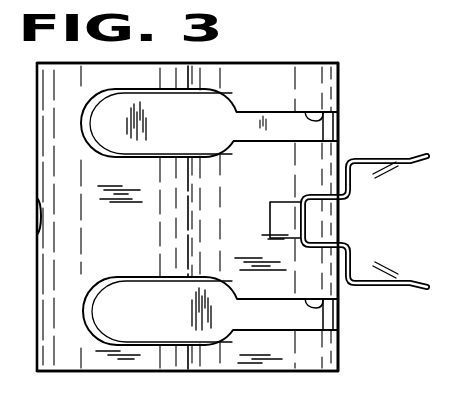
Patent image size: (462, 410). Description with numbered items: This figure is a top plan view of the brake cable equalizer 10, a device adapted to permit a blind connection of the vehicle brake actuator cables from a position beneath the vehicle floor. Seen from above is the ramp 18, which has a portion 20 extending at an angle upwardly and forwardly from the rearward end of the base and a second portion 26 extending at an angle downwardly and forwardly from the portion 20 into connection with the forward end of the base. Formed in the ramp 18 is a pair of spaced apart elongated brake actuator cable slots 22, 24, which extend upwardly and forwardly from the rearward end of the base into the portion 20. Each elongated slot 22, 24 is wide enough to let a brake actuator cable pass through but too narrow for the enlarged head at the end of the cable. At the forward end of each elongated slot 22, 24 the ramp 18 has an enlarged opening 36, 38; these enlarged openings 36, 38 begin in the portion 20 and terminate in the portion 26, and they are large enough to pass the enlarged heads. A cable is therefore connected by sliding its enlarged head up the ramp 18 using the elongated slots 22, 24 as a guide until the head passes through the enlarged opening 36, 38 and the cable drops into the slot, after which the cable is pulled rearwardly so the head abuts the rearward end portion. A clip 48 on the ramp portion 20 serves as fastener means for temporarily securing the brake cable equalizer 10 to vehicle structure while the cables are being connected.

The brake cable equalizer 10 is at (321, 53).
The ramp 18 is at (136, 240).
The portion of the ramp 20 is at (277, 71).
The elongated brake actuator cable slot 22 is at (338, 310).
The elongated brake actuator cable slot 24 is at (338, 115).
The second portion of the ramp 26 is at (90, 360).
The enlarged opening 36 is at (143, 283).
The enlarged opening 38 is at (174, 93).
The clip 48 is at (374, 157).